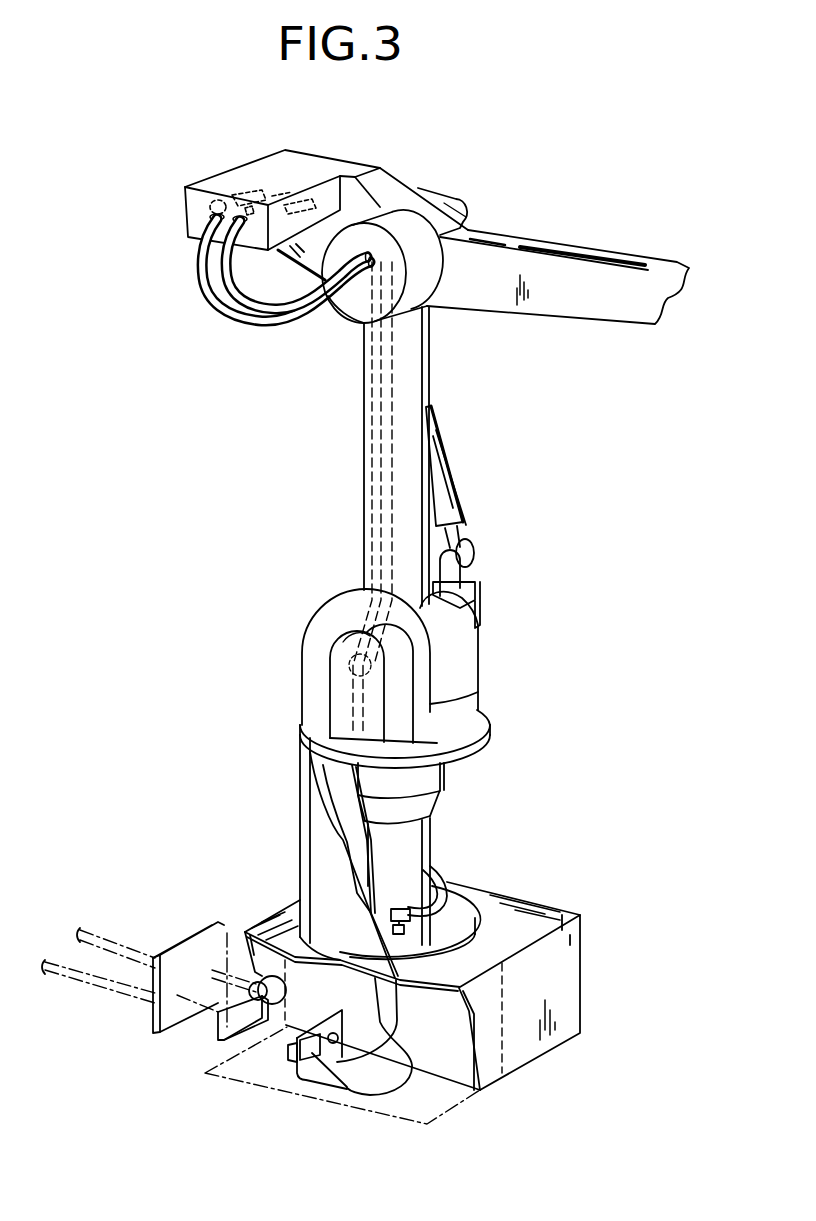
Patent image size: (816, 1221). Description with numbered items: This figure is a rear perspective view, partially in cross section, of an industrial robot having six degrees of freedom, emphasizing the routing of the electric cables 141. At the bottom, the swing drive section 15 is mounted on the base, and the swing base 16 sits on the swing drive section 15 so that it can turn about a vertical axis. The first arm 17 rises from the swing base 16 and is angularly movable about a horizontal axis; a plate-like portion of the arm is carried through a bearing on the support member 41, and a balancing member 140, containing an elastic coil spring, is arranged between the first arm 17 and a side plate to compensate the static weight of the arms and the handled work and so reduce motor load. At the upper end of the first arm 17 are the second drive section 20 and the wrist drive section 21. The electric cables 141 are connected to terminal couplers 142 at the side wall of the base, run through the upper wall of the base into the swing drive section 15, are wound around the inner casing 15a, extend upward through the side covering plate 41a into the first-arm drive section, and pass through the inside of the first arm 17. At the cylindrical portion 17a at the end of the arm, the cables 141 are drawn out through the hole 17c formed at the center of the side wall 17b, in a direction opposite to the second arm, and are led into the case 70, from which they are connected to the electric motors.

The wrist drive section 21 is at (247, 162).
The case 70 is at (208, 180).
The second drive section 20 is at (437, 186).
The hole 17c is at (385, 206).
The cylindrical portion 17a is at (423, 247).
The side wall 17b is at (353, 312).
The first arm 17 is at (413, 380).
The balancing member 140 is at (453, 510).
The support member 41 is at (312, 653).
The side covering plate 41a is at (340, 680).
The swing base 16 is at (343, 735).
The swing drive section 15 is at (320, 820).
The inner casing 15a is at (445, 777).
The electric cables 141 is at (443, 875).
The terminal couplers 142 is at (313, 1053).